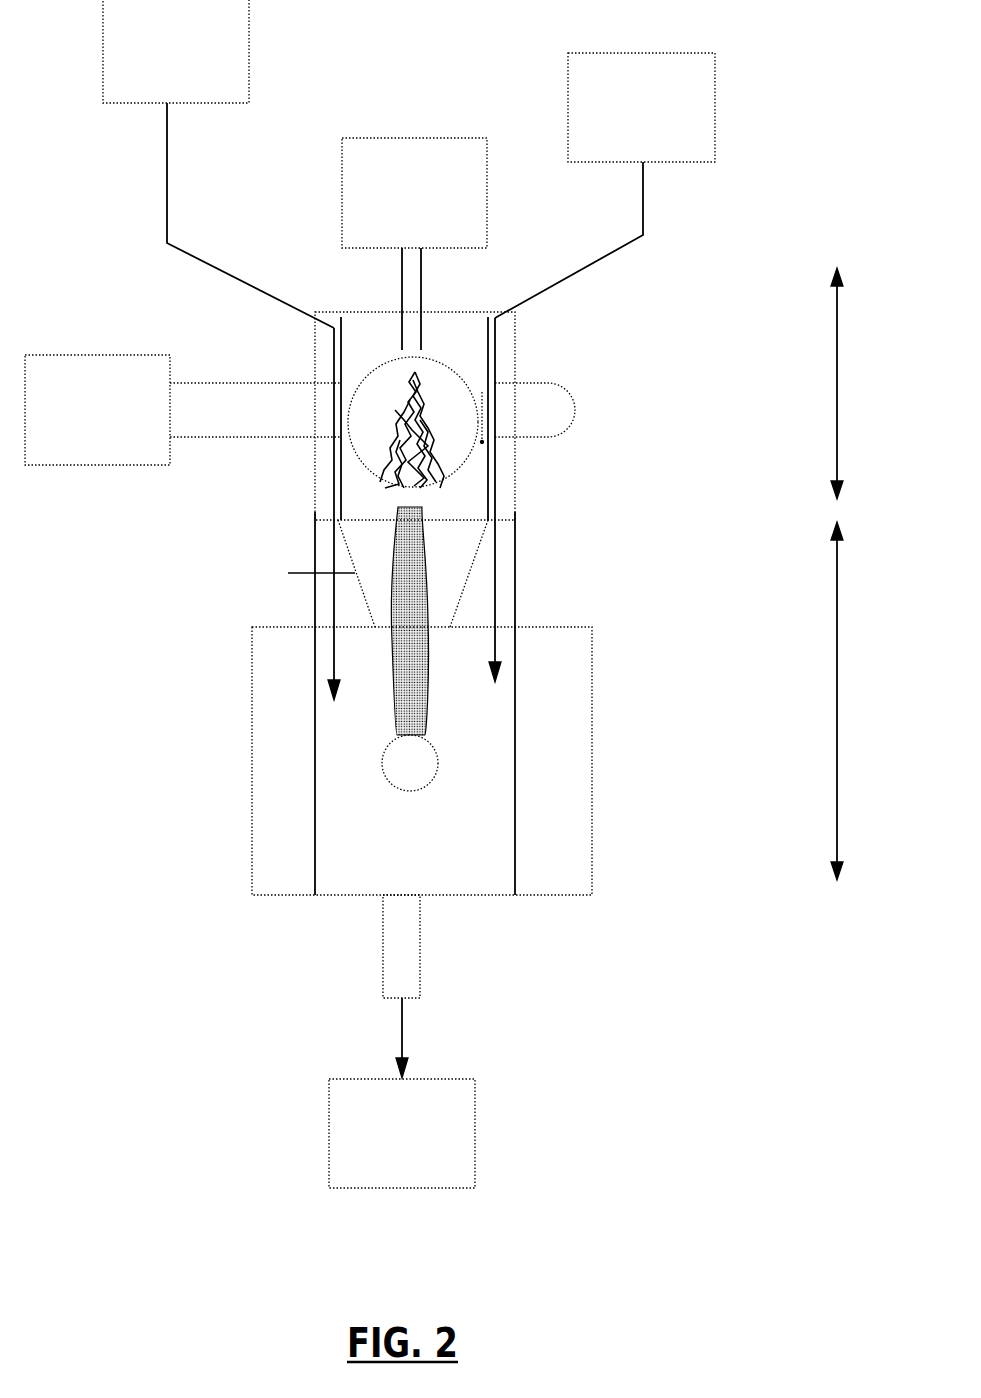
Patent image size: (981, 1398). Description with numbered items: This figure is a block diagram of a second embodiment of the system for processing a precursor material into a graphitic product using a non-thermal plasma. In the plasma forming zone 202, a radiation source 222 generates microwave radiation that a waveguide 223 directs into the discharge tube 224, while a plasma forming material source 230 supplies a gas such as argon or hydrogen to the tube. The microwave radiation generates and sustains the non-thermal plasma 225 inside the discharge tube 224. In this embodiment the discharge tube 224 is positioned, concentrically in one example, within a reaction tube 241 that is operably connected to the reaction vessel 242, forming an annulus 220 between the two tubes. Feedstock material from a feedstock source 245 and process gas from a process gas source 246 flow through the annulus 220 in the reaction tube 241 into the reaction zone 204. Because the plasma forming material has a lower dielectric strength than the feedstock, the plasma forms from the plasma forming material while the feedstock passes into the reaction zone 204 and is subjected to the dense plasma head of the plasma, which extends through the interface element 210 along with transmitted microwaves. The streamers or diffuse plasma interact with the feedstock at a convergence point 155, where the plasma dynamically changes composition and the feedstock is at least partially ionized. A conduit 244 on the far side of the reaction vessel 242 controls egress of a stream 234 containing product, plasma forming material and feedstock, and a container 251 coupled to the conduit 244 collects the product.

The gas supply 246 is at (218, 164).
The gas supply 245 is at (605, 185).
The feedstock feeder 230 is at (414, 244).
The power supply 222 is at (97, 410).
The power feed conduit 223 is at (255, 410).
The annulus 220 is at (495, 510).
The discharge tube 224 is at (488, 483).
The non-thermal plasma 225 is at (428, 383).
The reaction tube 241 is at (315, 465).
The reaction vessel 242 is at (388, 509).
The reaction chamber 210 is at (515, 608).
The convergence point 155 is at (410, 763).
The outlet 244 is at (383, 943).
The product flow 234 is at (402, 1025).
The collector 251 is at (402, 1133).
The plasma forming zone 202 is at (880, 383).
The reaction zone 204 is at (880, 701).